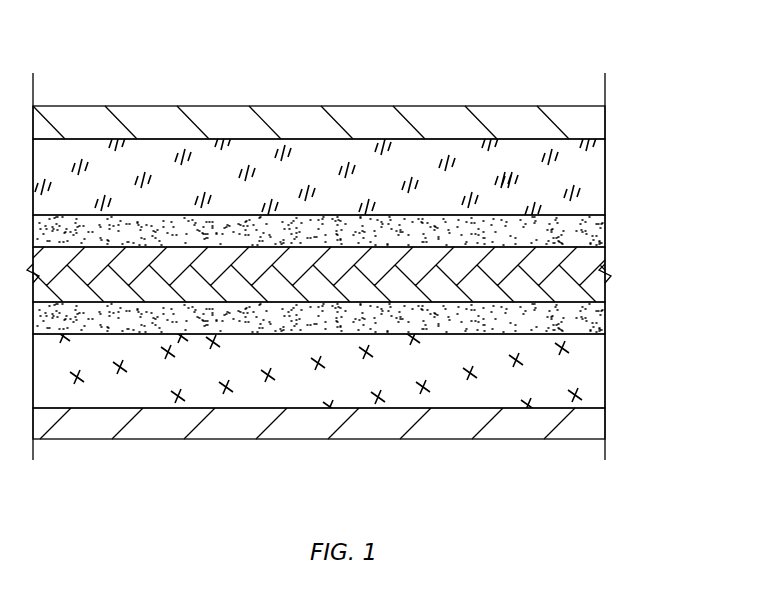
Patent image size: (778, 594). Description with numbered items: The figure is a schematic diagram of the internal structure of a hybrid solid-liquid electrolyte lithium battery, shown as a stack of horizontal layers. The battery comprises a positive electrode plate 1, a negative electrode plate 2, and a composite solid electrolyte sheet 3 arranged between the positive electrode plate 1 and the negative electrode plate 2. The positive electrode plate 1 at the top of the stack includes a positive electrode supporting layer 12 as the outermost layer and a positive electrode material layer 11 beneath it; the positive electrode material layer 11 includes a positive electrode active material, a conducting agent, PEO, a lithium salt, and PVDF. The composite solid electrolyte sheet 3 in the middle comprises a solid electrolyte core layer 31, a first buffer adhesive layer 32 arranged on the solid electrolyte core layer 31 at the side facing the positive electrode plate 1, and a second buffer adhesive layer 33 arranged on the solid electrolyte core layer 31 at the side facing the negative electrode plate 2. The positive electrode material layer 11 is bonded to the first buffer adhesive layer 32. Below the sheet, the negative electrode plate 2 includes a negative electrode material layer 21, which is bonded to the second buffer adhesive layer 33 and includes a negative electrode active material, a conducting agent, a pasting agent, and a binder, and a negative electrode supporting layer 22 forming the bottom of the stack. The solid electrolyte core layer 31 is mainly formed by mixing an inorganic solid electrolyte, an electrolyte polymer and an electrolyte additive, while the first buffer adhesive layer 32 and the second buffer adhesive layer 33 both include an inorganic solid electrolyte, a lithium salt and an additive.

The positive electrode plate 1 is at (389, 157).
The positive electrode supporting layer 12 is at (570, 124).
The positive electrode material layer 11 is at (567, 178).
The composite solid electrolyte sheet 3 is at (389, 286).
The first buffer adhesive layer 32 is at (567, 228).
The solid electrolyte core layer 31 is at (567, 272).
The second buffer adhesive layer 33 is at (567, 313).
The negative electrode plate 2 is at (389, 393).
The negative electrode material layer 21 is at (565, 368).
The negative electrode supporting layer 22 is at (572, 425).